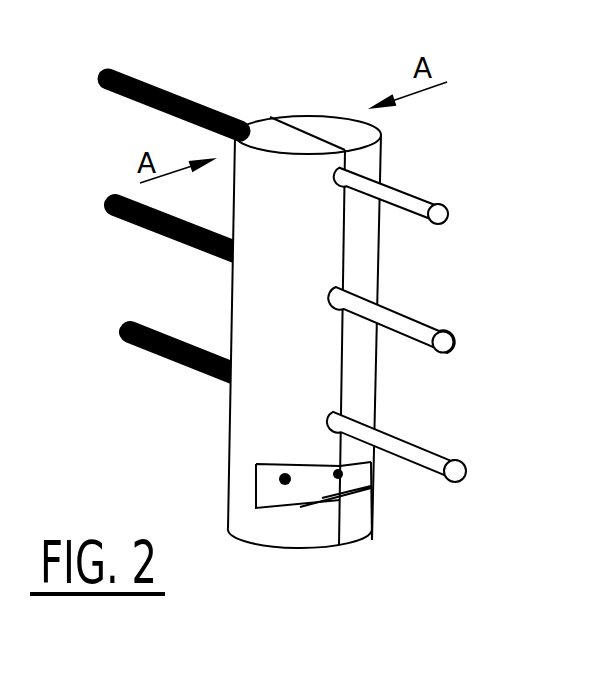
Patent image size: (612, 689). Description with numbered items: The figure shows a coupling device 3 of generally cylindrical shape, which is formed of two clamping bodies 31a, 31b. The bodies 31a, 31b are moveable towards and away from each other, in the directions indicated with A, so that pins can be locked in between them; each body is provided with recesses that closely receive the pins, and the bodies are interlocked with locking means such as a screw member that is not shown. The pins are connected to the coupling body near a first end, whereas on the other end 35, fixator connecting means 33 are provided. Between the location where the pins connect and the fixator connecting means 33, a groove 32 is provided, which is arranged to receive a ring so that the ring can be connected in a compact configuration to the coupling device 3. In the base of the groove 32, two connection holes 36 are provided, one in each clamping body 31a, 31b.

The coupling device 3 is at (480, 123).
The clamping body 31a is at (325, 123).
The clamping body 31b is at (268, 138).
The groove 32 is at (262, 476).
The fixator connecting means 33 is at (303, 545).
The other end 35 is at (363, 533).
The connection holes 36 is at (285, 487).